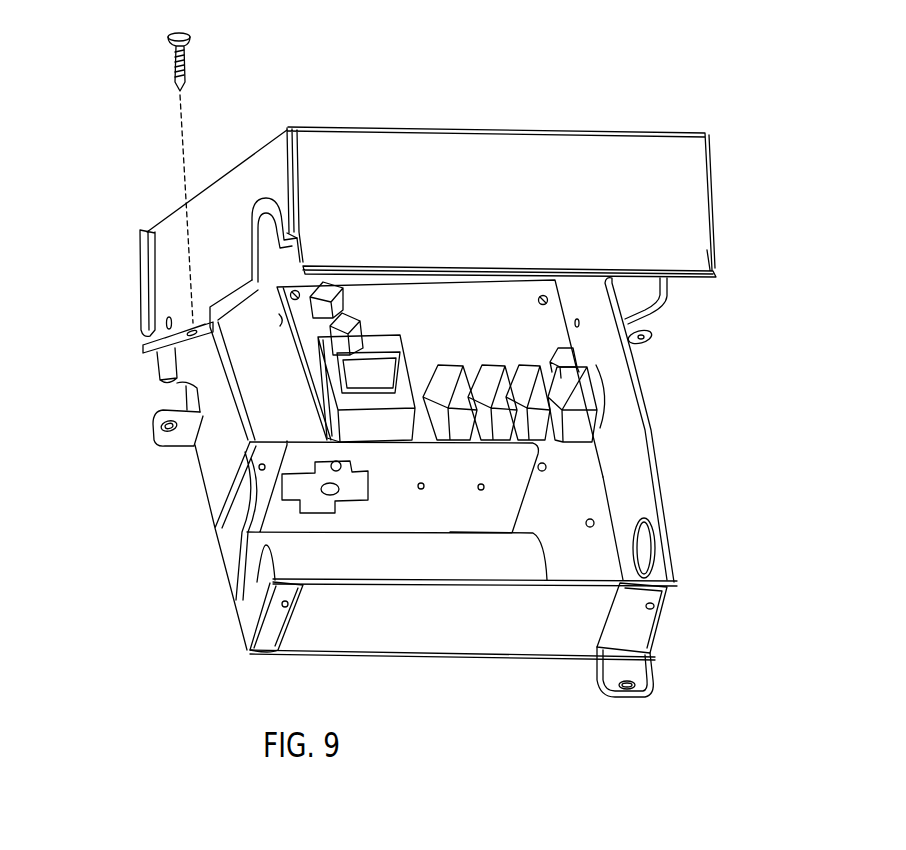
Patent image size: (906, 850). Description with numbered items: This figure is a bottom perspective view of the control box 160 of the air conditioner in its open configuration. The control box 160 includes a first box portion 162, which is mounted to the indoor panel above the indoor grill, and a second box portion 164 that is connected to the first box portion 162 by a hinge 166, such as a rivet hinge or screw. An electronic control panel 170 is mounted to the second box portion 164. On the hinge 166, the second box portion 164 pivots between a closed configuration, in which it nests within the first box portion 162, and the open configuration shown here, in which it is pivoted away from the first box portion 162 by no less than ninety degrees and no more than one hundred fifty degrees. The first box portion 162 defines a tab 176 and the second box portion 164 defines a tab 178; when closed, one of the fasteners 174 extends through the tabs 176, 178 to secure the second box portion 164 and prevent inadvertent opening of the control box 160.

The control box 160 is at (141, 233).
The first box portion 162 is at (707, 134).
The second box portion 164 is at (647, 653).
The hinge 166 is at (168, 318).
The electronic control panel 170 is at (463, 323).
The fasteners 174 is at (190, 67).
The tab 176 is at (192, 325).
The tab 178 is at (150, 430).